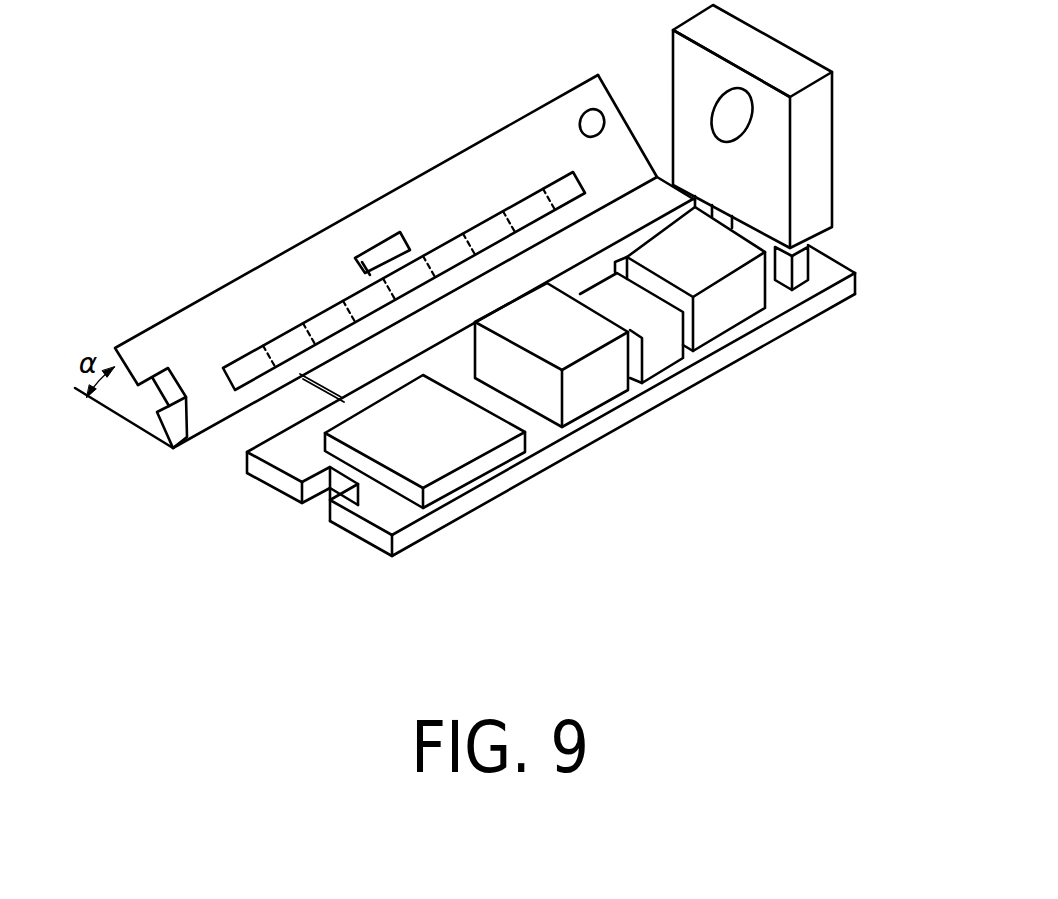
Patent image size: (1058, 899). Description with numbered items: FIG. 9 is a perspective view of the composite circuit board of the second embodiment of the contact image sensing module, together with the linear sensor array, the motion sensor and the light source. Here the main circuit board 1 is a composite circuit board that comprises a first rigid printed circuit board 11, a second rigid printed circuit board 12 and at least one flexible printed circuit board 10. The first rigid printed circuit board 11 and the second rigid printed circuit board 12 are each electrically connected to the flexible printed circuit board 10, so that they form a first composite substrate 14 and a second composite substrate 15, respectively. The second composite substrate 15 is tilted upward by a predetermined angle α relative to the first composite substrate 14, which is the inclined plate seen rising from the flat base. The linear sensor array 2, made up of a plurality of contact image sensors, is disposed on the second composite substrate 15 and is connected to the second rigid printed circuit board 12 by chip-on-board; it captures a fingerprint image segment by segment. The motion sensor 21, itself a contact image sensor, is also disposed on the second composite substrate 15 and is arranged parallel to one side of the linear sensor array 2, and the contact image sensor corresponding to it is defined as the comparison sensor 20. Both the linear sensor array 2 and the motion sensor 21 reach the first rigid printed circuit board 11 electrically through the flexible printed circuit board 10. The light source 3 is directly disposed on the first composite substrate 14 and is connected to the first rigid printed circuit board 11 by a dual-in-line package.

The main circuit board 1 is at (805, 408).
The linear sensor array 2 is at (355, 290).
The light source 3 is at (752, 123).
The flexible printed circuit board 10 is at (642, 208).
The first rigid printed circuit board 11 is at (383, 507).
The second rigid printed circuit board 12 is at (183, 333).
The first composite substrate 14 is at (437, 541).
The second composite substrate 15 is at (118, 331).
The comparison sensor 20 is at (415, 273).
The motion sensor 21 is at (375, 247).